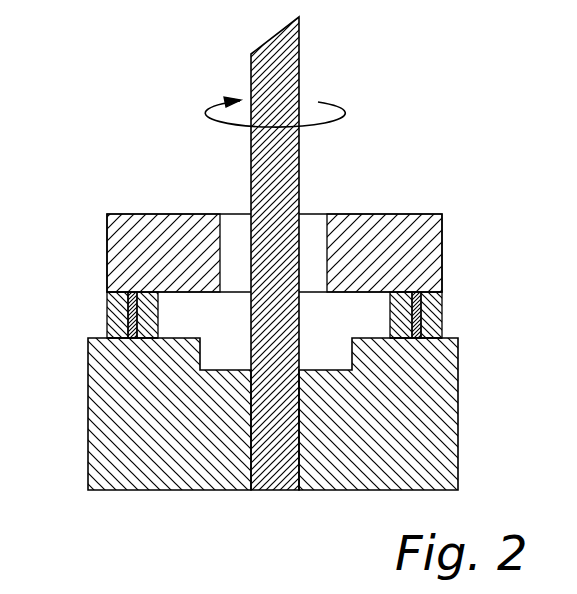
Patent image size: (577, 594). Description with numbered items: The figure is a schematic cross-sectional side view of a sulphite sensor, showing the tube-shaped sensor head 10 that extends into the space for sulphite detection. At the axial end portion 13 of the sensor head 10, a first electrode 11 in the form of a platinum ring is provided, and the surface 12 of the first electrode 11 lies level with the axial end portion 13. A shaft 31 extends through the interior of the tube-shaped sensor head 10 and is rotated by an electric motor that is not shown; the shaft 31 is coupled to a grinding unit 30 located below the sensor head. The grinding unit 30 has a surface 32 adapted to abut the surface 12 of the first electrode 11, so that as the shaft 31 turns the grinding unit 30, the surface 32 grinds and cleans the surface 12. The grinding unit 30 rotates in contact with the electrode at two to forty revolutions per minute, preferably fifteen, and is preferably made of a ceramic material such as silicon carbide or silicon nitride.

The sensor head 10 is at (421, 221).
The first electrode 11 is at (127, 318).
The surface of the first electrode 12 is at (137, 331).
The axial end portion 13 is at (428, 320).
The grinding unit 30 is at (430, 420).
The shaft 31 is at (287, 49).
The surface of the grinding unit 32 is at (128, 338).